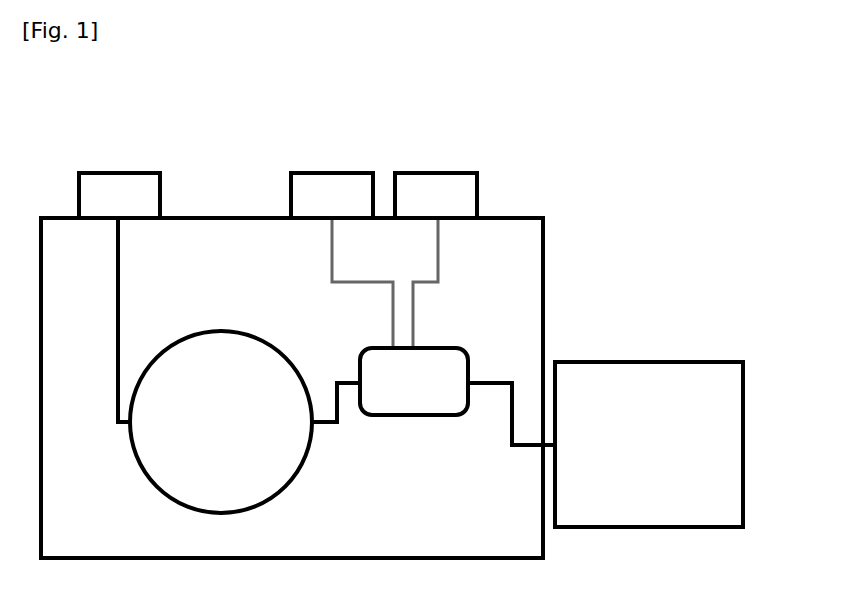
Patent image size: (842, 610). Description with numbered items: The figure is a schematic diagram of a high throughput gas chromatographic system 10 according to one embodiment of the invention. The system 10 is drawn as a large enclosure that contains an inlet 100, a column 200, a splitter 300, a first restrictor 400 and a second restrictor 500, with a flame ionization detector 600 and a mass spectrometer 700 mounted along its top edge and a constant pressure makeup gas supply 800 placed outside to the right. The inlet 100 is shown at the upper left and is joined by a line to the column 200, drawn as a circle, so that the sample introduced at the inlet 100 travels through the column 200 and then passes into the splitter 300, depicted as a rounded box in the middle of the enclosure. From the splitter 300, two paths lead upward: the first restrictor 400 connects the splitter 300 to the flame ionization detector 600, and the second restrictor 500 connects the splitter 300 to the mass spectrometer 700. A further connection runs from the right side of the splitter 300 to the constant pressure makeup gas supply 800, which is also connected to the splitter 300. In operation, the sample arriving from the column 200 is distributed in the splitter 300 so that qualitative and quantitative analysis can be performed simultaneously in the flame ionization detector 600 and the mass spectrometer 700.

The high throughput gas chromatographic system 10 is at (633, 146).
The inlet 100 is at (108, 183).
The column 200 is at (278, 462).
The splitter 300 is at (420, 402).
The first restrictor 400 is at (330, 271).
The second restrictor 500 is at (440, 283).
The flame ionization detector 600 is at (318, 184).
The mass spectrometer 700 is at (438, 184).
The constant pressure makeup gas supply 800 is at (627, 513).